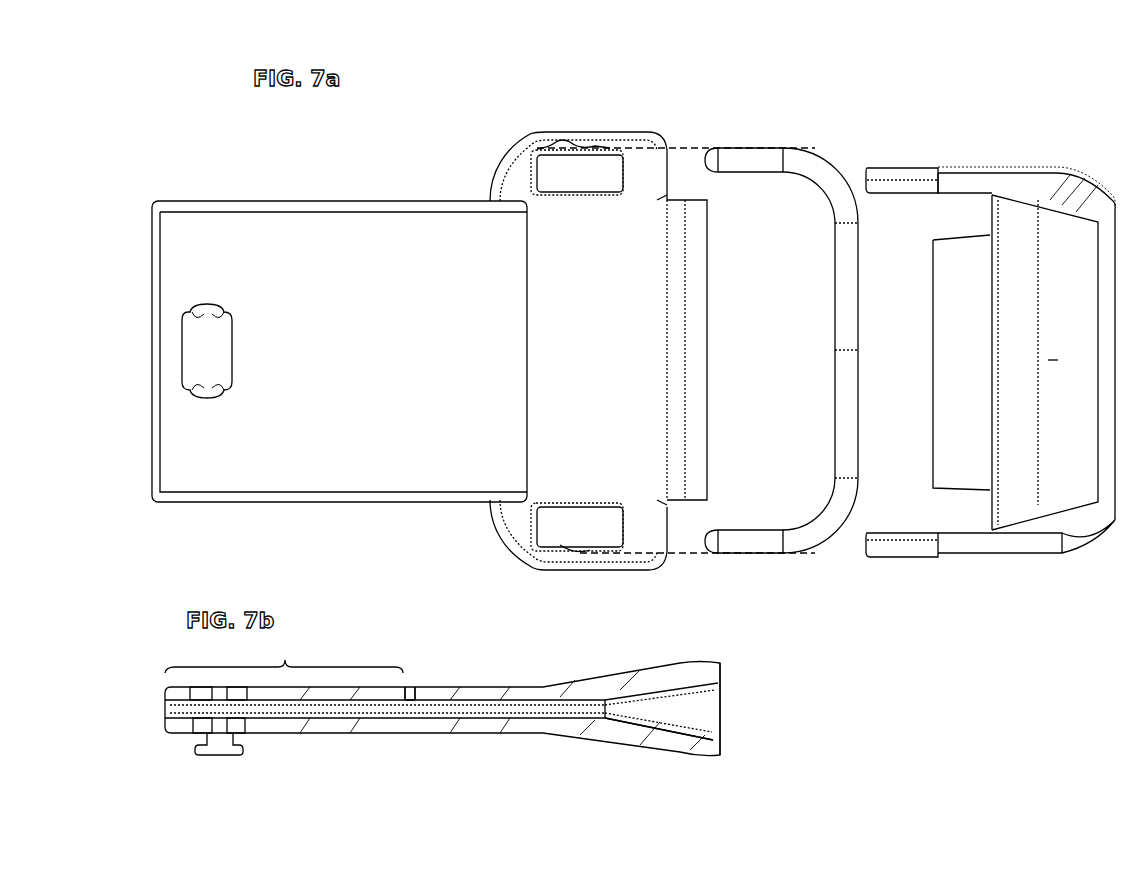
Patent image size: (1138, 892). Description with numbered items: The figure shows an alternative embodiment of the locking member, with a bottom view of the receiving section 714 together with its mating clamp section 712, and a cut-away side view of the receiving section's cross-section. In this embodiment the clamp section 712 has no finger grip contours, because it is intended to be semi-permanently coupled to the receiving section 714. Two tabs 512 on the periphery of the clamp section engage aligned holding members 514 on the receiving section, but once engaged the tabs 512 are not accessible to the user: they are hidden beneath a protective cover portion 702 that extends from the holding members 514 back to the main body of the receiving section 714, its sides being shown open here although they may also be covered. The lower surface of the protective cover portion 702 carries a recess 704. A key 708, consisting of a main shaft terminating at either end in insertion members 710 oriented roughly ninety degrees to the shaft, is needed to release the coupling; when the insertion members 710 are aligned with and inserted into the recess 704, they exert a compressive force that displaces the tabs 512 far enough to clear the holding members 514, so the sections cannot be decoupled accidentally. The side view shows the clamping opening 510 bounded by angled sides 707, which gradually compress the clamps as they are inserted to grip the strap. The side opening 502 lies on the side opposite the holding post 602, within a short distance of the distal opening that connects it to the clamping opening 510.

In FIG. 7A, the receiving section 714 is at (295, 181).
In FIG. 7A, the holding post 602 is at (196, 350).
In FIG. 7B, the holding post 602 is at (215, 748).
In FIG. 7A, the protective cover portion 702 is at (590, 134).
In FIG. 7A, the recess 704 is at (580, 548).
In FIG. 7A, the holding members 514 is at (660, 168).
In FIG. 7A, the key 708 is at (781, 353).
In FIG. 7B, the key 708 is at (172, 709).
In FIG. 7A, the insertion members 710 is at (752, 156).
In FIG. 7A, the clamp section 712 is at (990, 365).
In FIG. 7A, the tabs 512 is at (903, 558).
In FIG. 7B, the side opening 502 is at (407, 688).
In FIG. 7B, the clamping opening 510 is at (705, 712).
In FIG. 7B, the angled sides 707 is at (650, 752).